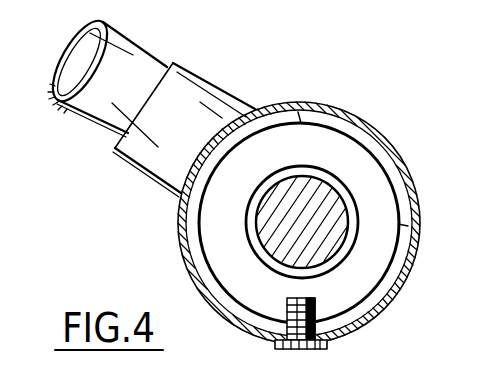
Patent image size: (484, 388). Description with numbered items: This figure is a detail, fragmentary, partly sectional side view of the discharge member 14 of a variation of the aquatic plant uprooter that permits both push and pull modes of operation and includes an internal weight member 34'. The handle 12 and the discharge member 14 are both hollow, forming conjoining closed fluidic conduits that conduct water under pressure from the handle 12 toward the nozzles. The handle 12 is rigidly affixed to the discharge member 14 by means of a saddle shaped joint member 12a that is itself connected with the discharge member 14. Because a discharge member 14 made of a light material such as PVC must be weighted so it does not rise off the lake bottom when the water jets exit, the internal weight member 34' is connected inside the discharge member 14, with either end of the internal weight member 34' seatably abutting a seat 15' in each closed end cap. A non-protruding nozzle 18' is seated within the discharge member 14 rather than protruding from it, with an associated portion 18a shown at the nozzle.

The handle 12 is at (148, 53).
The saddle shaped joint member 12a is at (197, 73).
The discharge member 14 is at (419, 242).
The internal weight member 34' is at (307, 205).
The seat 15' is at (327, 222).
The non-protruding nozzle 18' is at (340, 327).
The screw flange 18a is at (262, 338).